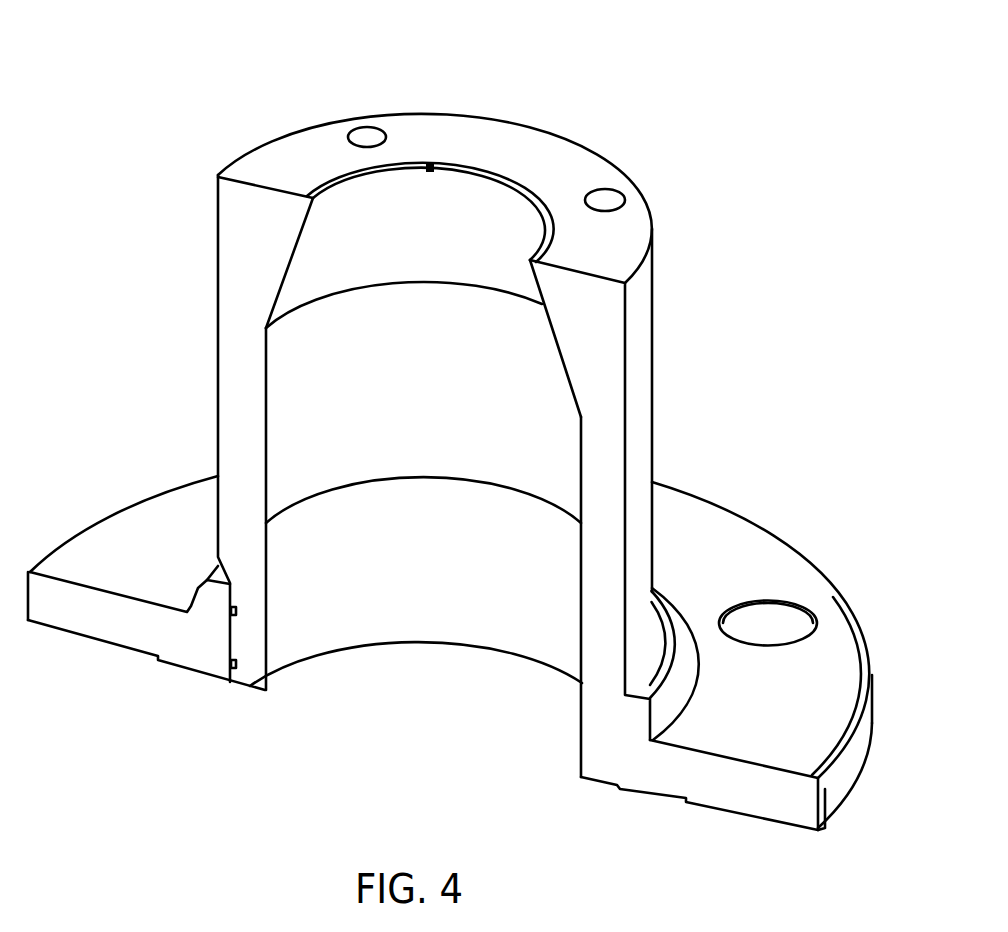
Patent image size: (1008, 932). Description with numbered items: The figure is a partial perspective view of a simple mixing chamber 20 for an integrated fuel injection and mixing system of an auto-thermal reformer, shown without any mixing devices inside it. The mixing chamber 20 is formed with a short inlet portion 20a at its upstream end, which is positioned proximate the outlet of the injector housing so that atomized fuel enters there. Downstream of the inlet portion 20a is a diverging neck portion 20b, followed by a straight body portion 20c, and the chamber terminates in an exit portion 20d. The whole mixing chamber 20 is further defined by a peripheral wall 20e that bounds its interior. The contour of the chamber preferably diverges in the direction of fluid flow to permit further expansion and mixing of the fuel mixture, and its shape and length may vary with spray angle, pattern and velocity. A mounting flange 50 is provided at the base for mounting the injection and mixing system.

The mixing chamber 20 is at (695, 268).
The inlet portion 20a is at (428, 166).
The neck portion 20b is at (323, 270).
The body portion 20c is at (332, 423).
The exit portion 20d is at (378, 628).
The peripheral wall 20e is at (267, 660).
The mounting flange 50 is at (708, 570).